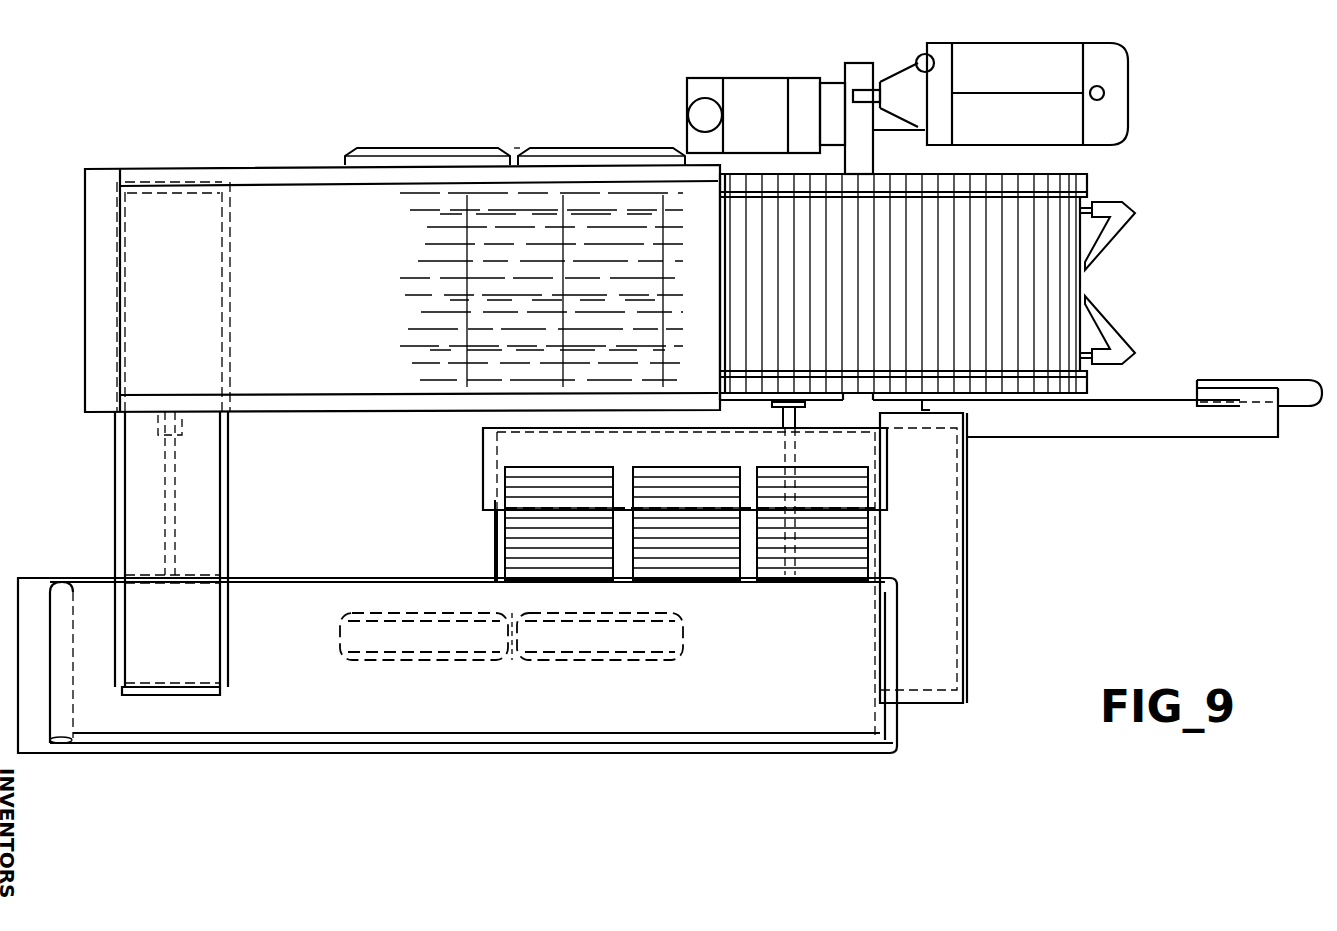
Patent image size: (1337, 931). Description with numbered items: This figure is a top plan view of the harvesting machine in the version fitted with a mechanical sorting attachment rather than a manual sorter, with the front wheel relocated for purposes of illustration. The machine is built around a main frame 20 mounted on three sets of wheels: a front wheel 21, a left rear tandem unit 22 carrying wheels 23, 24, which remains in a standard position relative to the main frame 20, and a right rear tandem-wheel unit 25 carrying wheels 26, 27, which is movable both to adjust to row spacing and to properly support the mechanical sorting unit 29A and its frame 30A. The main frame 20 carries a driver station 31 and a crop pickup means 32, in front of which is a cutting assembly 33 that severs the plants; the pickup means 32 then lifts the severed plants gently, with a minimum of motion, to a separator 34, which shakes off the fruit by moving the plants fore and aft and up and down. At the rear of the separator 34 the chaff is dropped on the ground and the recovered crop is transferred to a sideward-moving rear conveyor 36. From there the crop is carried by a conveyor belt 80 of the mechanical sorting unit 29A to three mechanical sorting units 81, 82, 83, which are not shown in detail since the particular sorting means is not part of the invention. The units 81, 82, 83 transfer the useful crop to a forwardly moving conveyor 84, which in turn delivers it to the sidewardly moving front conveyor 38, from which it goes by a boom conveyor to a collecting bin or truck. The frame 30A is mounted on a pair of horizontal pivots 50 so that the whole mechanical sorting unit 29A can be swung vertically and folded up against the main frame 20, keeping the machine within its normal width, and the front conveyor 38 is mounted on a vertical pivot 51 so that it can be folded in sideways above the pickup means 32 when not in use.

The main frame 20 is at (1060, 424).
The front wheel 21 is at (1297, 380).
The left rear tandem unit 22 is at (516, 154).
The wheel 23 is at (441, 148).
The wheel 24 is at (586, 148).
The right rear tandem-wheel unit 25 is at (511, 650).
The wheel 26 is at (448, 660).
The wheel 27 is at (603, 660).
The mechanical sorting unit 29A is at (496, 554).
The frame 30A is at (315, 752).
The driver station 31 is at (750, 96).
The crop pickup means 32 is at (1022, 288).
The cutting assembly 33 is at (1112, 320).
The separator 34 is at (598, 282).
The rear conveyor 36 is at (137, 444).
The front conveyor 38 is at (948, 578).
The horizontal pivots 50 is at (176, 430).
The vertical pivot 51 is at (925, 404).
The conveyor belt 80 is at (327, 600).
The mechanical sorting unit 81 is at (578, 483).
The mechanical sorting unit 82 is at (700, 483).
The mechanical sorting unit 83 is at (822, 483).
The forwardly moving conveyor 84 is at (486, 446).